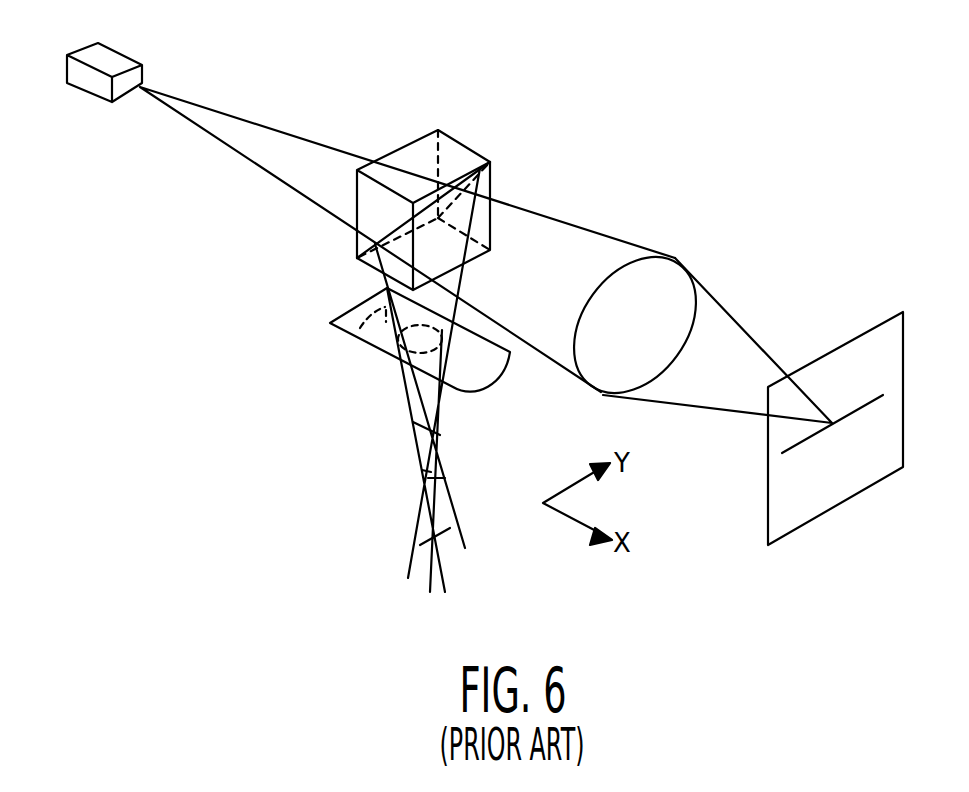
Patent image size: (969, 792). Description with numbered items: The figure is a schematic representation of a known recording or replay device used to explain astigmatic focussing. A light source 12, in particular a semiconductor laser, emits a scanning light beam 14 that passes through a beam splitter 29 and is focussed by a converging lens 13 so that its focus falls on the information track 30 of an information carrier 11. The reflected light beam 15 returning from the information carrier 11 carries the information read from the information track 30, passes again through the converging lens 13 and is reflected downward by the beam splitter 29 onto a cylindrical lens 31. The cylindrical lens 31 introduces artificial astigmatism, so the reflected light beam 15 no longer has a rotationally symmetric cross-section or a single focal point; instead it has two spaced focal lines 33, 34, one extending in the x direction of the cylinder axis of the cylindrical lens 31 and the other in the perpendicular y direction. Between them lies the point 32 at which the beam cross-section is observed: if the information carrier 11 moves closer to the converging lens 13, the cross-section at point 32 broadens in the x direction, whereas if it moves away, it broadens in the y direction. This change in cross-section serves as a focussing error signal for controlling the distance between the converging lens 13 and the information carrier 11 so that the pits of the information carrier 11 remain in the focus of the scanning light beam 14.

The information carrier 11 is at (858, 337).
The light source 12 is at (93, 98).
The converging lens 13 is at (682, 260).
The scanning light beam 14 is at (277, 142).
The reflected light beam 15 is at (438, 300).
The beam splitter 29 is at (407, 155).
The information track 30 is at (793, 448).
The cylindrical lens 31 is at (372, 352).
The point 32 is at (445, 478).
The focal line 33 is at (440, 434).
The focal line 34 is at (445, 540).